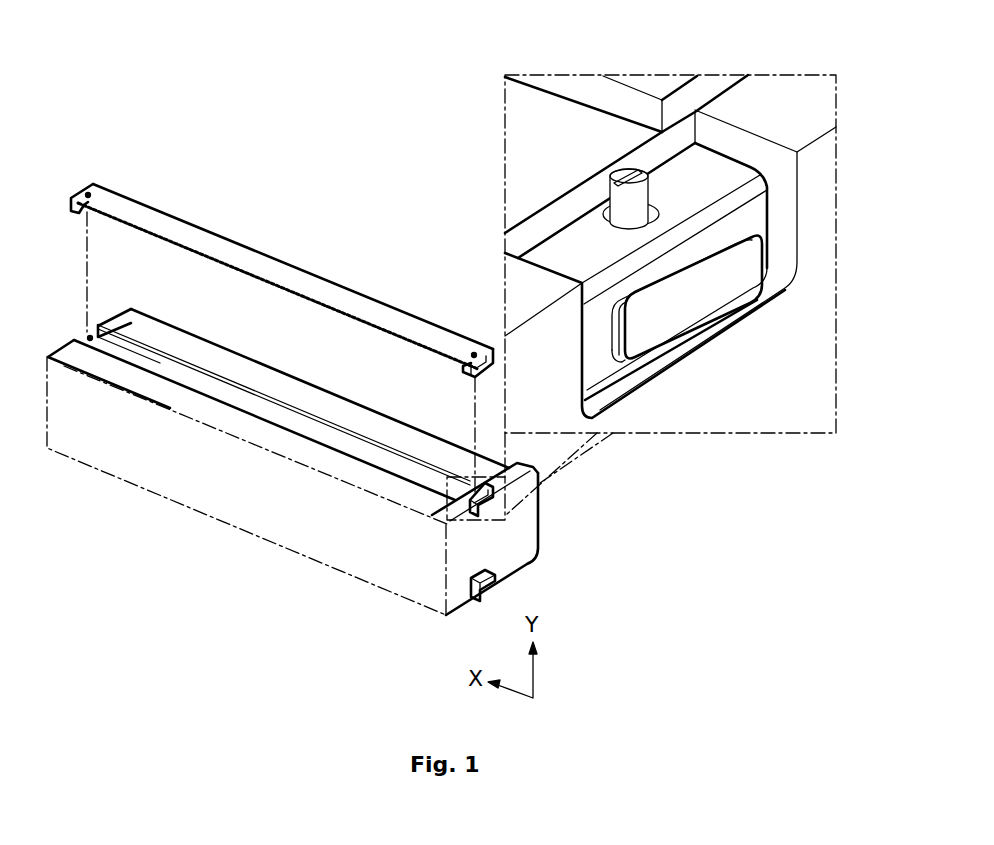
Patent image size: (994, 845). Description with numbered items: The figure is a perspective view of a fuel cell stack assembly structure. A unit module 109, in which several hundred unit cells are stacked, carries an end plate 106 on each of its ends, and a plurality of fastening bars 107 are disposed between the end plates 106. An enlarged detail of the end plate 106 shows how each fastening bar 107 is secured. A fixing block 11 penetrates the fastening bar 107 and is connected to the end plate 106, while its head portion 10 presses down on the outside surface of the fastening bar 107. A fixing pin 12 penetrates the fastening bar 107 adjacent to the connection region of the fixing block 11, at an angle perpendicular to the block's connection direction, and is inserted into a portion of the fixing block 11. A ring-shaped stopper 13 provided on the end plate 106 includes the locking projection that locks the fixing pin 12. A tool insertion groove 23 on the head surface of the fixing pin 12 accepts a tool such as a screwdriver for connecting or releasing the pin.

The head portion 10 is at (713, 293).
The fixing block 11 is at (697, 342).
The fixing pin 12 is at (609, 189).
The ring-shaped stopper 13 is at (607, 228).
The tool insertion groove 23 is at (607, 168).
The end plate 106 is at (768, 104).
The fastening bar 107 is at (288, 270).
The unit module 109 is at (287, 511).